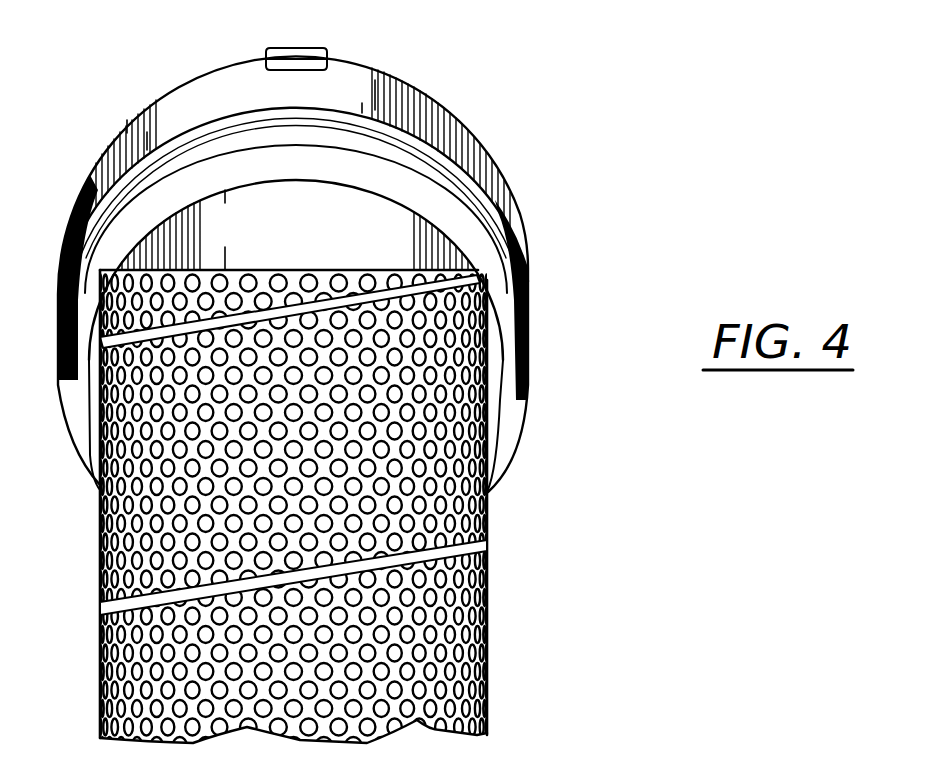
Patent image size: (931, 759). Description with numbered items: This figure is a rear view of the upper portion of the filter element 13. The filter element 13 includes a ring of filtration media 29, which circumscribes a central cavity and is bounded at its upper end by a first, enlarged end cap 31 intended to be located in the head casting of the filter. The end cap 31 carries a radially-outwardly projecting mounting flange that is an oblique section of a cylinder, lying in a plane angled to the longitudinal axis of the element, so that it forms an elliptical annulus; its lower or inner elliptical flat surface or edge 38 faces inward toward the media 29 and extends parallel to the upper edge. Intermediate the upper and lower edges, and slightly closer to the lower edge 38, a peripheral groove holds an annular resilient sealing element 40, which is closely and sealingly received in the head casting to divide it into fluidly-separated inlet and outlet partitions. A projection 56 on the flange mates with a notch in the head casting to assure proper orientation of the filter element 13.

The filter element 13 is at (472, 534).
The filtration media 29 is at (487, 694).
The first end cap 31 is at (489, 150).
The lower elliptical flat surface or edge 38 is at (508, 358).
The annular resilient sealing element 40 is at (165, 153).
The projection 56 is at (300, 48).